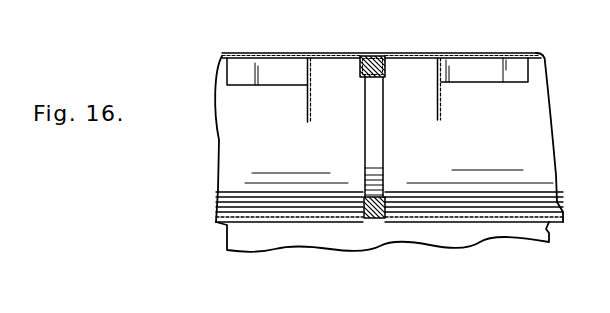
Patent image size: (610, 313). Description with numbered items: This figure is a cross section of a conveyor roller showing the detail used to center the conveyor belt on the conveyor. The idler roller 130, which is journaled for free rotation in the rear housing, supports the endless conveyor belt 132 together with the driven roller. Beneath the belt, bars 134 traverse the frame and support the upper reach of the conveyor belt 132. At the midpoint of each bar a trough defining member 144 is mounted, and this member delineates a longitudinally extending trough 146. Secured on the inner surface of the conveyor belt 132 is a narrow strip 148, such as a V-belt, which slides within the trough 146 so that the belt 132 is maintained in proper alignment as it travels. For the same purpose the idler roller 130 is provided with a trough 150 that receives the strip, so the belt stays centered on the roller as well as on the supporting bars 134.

The idler roller 130 is at (543, 142).
The conveyor belt 132 is at (286, 53).
The bars 134 is at (289, 72).
The trough defining member 144 is at (389, 70).
The trough 146 is at (372, 56).
The narrow strip 148 is at (374, 60).
The troughs 150 is at (384, 151).